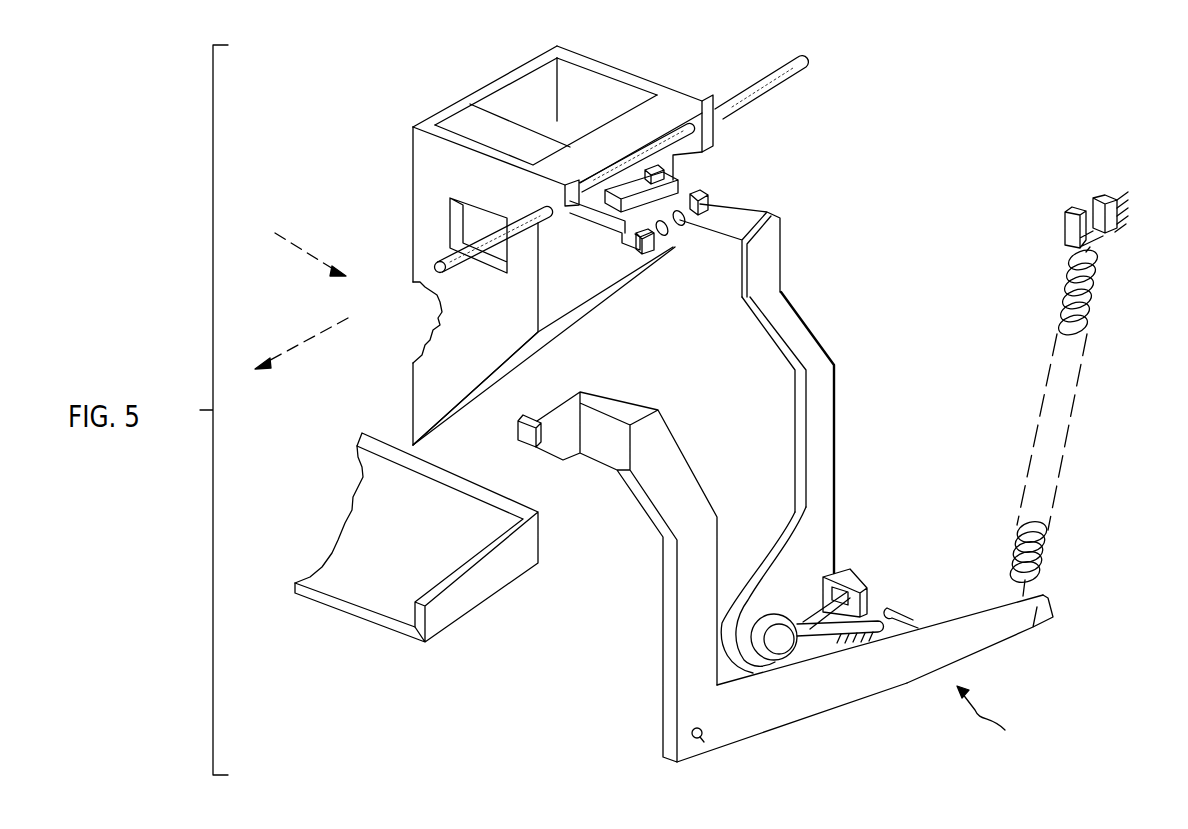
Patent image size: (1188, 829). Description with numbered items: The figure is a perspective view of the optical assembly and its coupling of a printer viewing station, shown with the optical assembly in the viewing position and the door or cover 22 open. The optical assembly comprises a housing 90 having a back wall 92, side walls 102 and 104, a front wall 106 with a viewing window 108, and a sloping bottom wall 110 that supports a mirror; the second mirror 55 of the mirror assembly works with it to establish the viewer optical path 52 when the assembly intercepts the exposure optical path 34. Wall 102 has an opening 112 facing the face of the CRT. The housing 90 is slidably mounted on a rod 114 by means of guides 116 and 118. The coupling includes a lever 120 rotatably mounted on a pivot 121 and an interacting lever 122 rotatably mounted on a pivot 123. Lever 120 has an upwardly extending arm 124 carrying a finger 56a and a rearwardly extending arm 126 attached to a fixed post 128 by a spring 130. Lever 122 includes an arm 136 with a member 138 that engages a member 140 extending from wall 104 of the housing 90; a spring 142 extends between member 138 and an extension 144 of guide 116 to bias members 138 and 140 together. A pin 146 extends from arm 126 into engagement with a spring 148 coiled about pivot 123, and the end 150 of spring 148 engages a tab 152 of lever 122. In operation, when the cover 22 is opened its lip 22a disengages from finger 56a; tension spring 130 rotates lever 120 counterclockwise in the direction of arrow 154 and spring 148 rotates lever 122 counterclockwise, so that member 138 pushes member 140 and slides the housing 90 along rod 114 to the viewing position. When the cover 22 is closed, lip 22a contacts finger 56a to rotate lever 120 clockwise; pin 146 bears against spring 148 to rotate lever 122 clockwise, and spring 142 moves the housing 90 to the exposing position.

The cover 22 is at (377, 619).
The lip 22a is at (460, 561).
The exposure optical path 34 is at (303, 250).
The viewer optical path 52 is at (302, 344).
The mirror 55 is at (540, 123).
The finger 56a is at (526, 434).
The housing 90 is at (413, 187).
The back wall 92 is at (640, 77).
The side wall 102 is at (460, 103).
The side wall 104 is at (617, 121).
The front wall 106 is at (508, 347).
The viewing window 108 is at (473, 212).
The sloping bottom wall 110 is at (612, 314).
The opening 112 is at (420, 319).
The rod 114 is at (812, 60).
The guide 116 is at (565, 177).
The guide 118 is at (703, 97).
The lever 120 is at (818, 716).
The pivot 121 is at (704, 742).
The interacting lever 122 is at (820, 344).
The pivot 123 is at (766, 632).
The upwardly extending arm 124 is at (695, 488).
The rearwardly extending arm 126 is at (983, 638).
The fixed post 128 is at (1113, 229).
The spring 130 is at (1090, 314).
The arm 136 is at (827, 438).
The member 138 is at (730, 214).
The member 140 is at (678, 188).
The spring 142 is at (684, 229).
The extension 144 is at (600, 241).
The pin 146 is at (897, 628).
The spring 148 is at (817, 606).
The end 150 is at (873, 581).
The tab 152 is at (870, 599).
The arrow 154 is at (1004, 721).